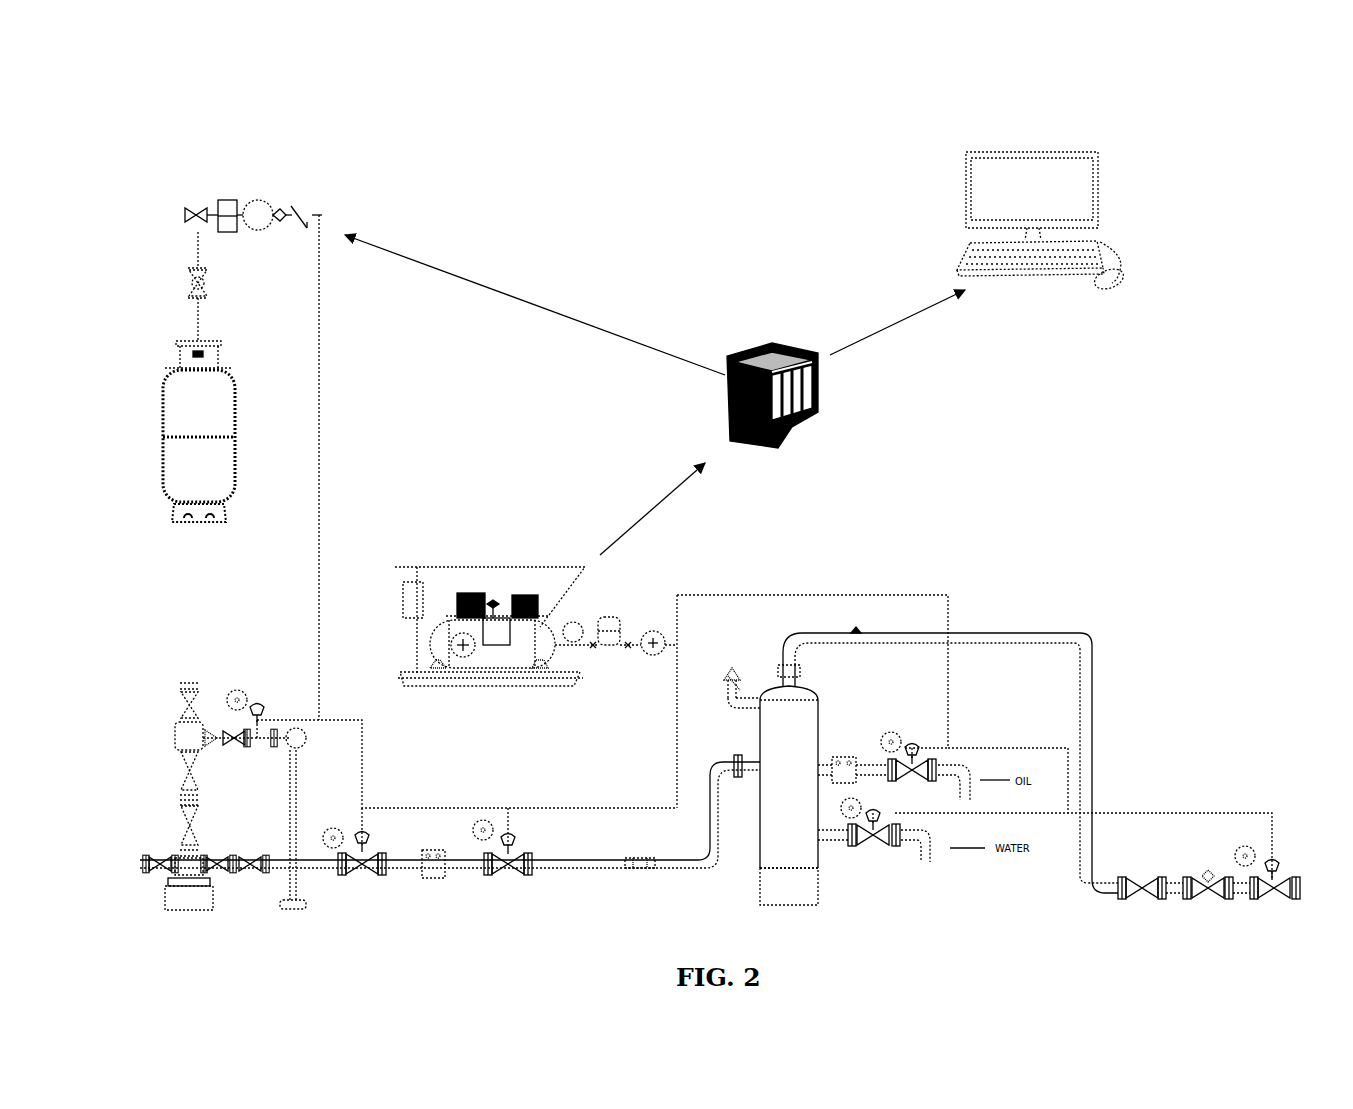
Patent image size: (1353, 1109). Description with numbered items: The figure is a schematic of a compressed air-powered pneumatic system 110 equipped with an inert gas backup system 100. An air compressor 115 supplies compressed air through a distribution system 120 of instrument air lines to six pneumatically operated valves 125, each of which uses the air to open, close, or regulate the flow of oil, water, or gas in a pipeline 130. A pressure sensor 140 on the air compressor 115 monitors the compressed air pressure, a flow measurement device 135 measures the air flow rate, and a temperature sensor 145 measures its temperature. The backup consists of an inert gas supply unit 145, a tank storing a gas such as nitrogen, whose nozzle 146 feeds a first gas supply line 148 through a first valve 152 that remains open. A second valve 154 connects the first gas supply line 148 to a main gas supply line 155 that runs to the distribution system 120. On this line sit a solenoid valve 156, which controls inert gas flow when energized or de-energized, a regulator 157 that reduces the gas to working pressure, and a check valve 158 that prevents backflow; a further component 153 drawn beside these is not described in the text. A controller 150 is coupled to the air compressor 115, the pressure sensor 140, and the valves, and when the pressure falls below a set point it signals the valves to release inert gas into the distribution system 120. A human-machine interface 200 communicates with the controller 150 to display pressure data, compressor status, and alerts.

The inert gas backup system 100 is at (120, 138).
The compressed air-powered pneumatic system 110 is at (462, 514).
The air compressor 115 is at (545, 630).
The distribution system 120 is at (364, 770).
The pneumatically operated valve 125 is at (256, 715).
The pipeline 130 is at (585, 862).
The flow measurement device 135 is at (618, 620).
The pressure sensor 140 is at (470, 655).
The inert gas supply unit 145 is at (162, 430).
The nozzle 146 is at (205, 358).
The first gas supply line 148 is at (195, 252).
The controller 150 is at (758, 350).
The first valve 152 is at (219, 303).
The regulator 153 is at (228, 198).
The second valve 154 is at (190, 208).
The main gas supply line 155 is at (321, 408).
The solenoid valve 156 is at (262, 200).
The regulator 157 is at (283, 205).
The check valve 158 is at (302, 198).
The human-machine interface 200 is at (1100, 172).